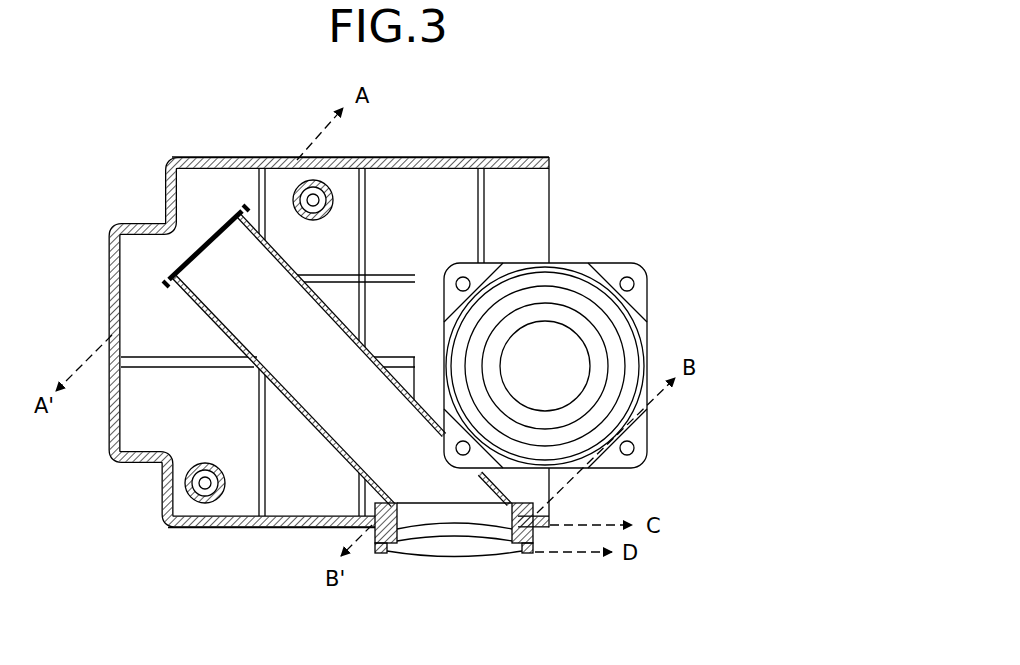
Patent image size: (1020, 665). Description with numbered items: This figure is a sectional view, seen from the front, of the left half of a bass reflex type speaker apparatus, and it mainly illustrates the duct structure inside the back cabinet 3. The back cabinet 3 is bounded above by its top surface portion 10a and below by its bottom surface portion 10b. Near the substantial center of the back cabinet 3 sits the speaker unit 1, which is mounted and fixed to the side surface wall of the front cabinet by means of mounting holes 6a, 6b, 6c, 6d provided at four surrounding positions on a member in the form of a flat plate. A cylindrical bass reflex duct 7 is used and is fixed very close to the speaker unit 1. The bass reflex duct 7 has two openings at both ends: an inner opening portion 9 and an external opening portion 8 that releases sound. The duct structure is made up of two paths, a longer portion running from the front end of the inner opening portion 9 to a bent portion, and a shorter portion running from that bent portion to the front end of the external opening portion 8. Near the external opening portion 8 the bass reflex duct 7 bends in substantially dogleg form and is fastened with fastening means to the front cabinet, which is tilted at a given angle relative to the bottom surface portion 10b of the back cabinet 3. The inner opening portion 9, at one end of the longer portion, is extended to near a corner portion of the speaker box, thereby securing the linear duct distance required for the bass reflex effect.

The speaker unit 1 is at (572, 345).
The back cabinet 3 is at (470, 157).
The mounting hole 6a is at (457, 280).
The mounting hole 6b is at (456, 453).
The mounting hole 6c is at (631, 455).
The mounting hole 6d is at (632, 280).
The bass reflex duct 7 is at (337, 433).
The external opening portion 8 is at (455, 548).
The inner opening portion 9 is at (196, 256).
The top surface portion 10a is at (557, 158).
The bottom surface portion 10b is at (161, 522).